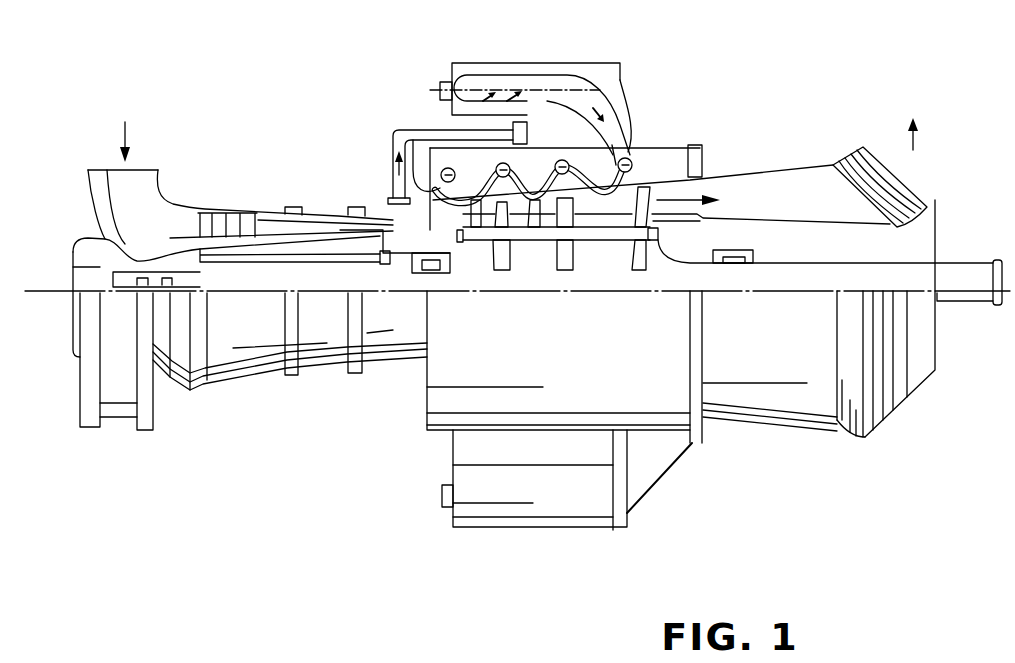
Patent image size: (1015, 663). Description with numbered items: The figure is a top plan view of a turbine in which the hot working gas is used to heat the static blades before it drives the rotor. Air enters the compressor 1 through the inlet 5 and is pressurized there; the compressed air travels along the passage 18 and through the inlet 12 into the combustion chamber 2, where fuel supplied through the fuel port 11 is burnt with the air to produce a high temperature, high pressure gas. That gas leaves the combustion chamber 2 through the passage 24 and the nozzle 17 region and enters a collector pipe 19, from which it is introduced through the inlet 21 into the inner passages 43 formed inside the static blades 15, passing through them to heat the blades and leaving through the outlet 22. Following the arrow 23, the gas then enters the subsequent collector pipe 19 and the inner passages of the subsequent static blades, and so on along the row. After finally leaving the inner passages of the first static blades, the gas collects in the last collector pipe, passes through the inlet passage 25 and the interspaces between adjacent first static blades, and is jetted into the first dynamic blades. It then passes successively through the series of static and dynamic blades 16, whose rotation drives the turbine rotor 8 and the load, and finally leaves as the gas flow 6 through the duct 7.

The compressor 1 is at (210, 207).
The combustion chamber 2 is at (546, 63).
The inlet 5 is at (118, 124).
The gas flow 6 is at (905, 165).
The duct 7 is at (848, 158).
The turbine rotor 8 is at (968, 303).
The fuel port 11 is at (443, 84).
The inlet 12 is at (500, 107).
The static blades 15 is at (607, 213).
The dynamic blades 16 is at (568, 266).
The nozzle 17 is at (618, 125).
The passage 18 is at (393, 192).
The collector pipe 19 is at (497, 167).
The inlet 21 is at (530, 175).
The outlet 22 is at (620, 125).
The arrow 23 is at (580, 160).
The passage 24 is at (626, 156).
The inlet passage 25 is at (392, 152).
The inner passages 43 is at (537, 200).